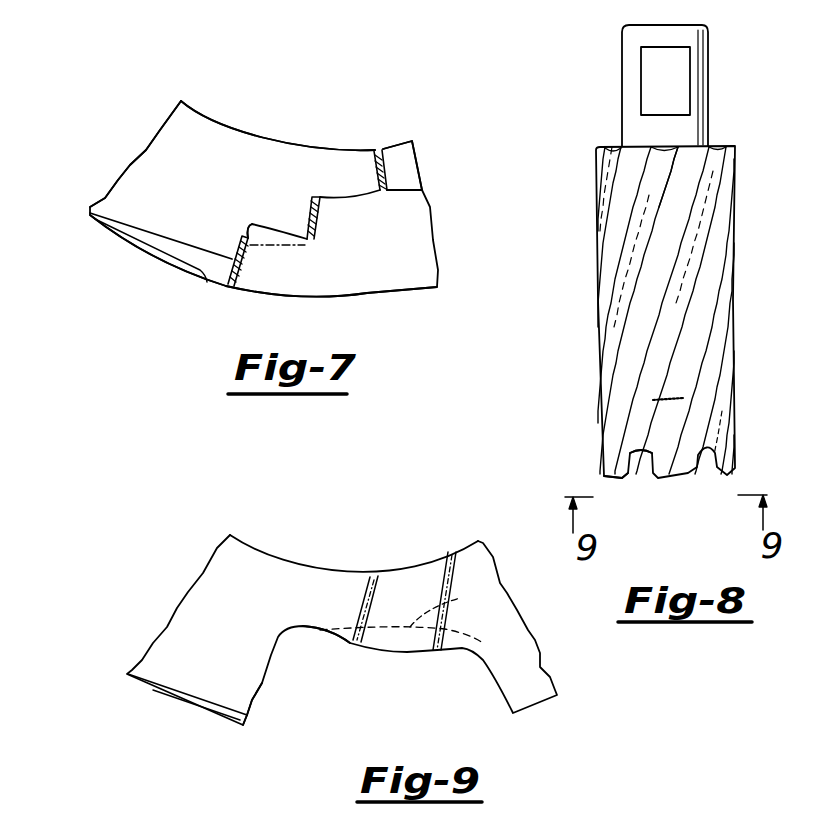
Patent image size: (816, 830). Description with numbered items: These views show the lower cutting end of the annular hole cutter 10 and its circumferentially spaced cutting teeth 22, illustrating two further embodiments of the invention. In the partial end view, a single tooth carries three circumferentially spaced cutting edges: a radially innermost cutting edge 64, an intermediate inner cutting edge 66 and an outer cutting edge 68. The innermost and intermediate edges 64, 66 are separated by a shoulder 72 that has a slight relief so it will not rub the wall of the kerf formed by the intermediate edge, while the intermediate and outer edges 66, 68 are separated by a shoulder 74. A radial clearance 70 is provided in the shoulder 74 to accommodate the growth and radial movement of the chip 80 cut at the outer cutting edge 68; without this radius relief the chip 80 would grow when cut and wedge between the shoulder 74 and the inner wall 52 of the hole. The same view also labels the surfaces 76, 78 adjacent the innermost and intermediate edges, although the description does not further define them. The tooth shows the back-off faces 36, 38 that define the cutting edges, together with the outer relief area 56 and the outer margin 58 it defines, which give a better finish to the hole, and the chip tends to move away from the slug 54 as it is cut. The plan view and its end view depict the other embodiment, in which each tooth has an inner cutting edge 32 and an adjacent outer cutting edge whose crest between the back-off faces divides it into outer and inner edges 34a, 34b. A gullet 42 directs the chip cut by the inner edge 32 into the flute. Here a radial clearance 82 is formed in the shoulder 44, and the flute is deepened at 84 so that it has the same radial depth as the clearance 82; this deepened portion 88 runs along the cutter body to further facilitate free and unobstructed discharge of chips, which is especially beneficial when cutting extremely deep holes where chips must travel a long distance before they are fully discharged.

In FIG. 8, the annular hole cutter 10 is at (581, 139).
In FIG. 9, the annular hole cutter 10 is at (390, 563).
In FIG. 8, the cutting teeth 22 is at (665, 437).
In FIG. 9, the inner cutting edge 32 is at (380, 590).
In FIG. 9, the outer edge of outer cutting edge 34a is at (243, 730).
In FIG. 9, the inner edge of outer cutting edge 34b is at (257, 698).
In FIG. 7, the back-off face 36 is at (171, 177).
In FIG. 7, the back-off face 38 is at (213, 272).
In FIG. 7, the gullet 42 is at (402, 153).
In FIG. 9, the gullet 42 is at (478, 541).
In FIG. 9, the shoulder 44 is at (347, 645).
In FIG. 7, the inner wall 52 is at (330, 295).
In FIG. 7, the slug 54 is at (269, 115).
In FIG. 7, the outer relief area 56 is at (141, 250).
In FIG. 7, the outer margin 58 is at (212, 287).
In FIG. 7, the radially innermost cutting edge 64 is at (373, 157).
In FIG. 7, the intermediate inner cutting edge 66 is at (309, 212).
In FIG. 7, the outer cutting edge 68 is at (236, 252).
In FIG. 7, the radial clearance 70 is at (246, 226).
In FIG. 7, the shoulder 72 is at (363, 200).
In FIG. 7, the shoulder 74 is at (284, 238).
In FIG. 7, the outer tooth face 76 is at (388, 180).
In FIG. 7, the relief surface 78 is at (322, 223).
In FIG. 7, the chip 80 is at (247, 273).
In FIG. 8, the radial clearance 82 is at (651, 480).
In FIG. 8, the deepened flute portion 84 is at (678, 403).
In FIG. 9, the deepened flute portion 84 is at (464, 598).
In FIG. 8, the deepened portion of flute 88 is at (672, 357).